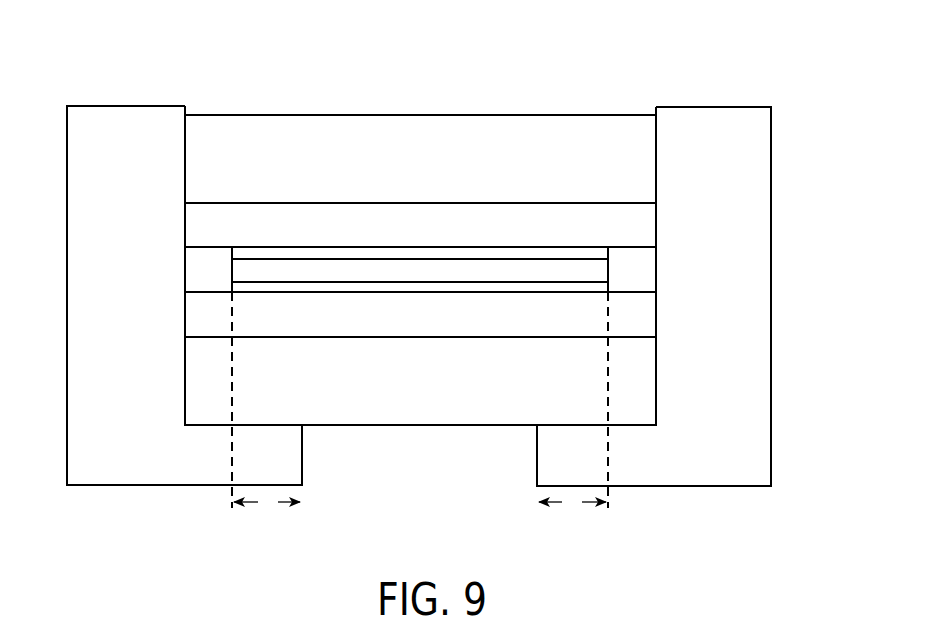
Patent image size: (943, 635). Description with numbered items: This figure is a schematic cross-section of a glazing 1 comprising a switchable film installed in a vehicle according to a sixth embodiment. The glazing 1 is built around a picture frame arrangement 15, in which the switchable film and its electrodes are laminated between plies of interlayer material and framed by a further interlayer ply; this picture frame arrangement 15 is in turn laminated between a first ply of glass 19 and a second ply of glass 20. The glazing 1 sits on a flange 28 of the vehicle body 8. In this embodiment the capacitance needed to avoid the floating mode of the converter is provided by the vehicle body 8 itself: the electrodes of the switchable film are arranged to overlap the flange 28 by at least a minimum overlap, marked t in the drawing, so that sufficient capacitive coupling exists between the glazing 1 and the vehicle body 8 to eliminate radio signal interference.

The glazing 1 is at (428, 289).
The vehicle body 8 is at (112, 273).
The picture frame arrangement 15 is at (635, 273).
The first ply of glass 19 is at (630, 228).
The second ply of glass 20 is at (637, 373).
The flange 28 is at (179, 458).